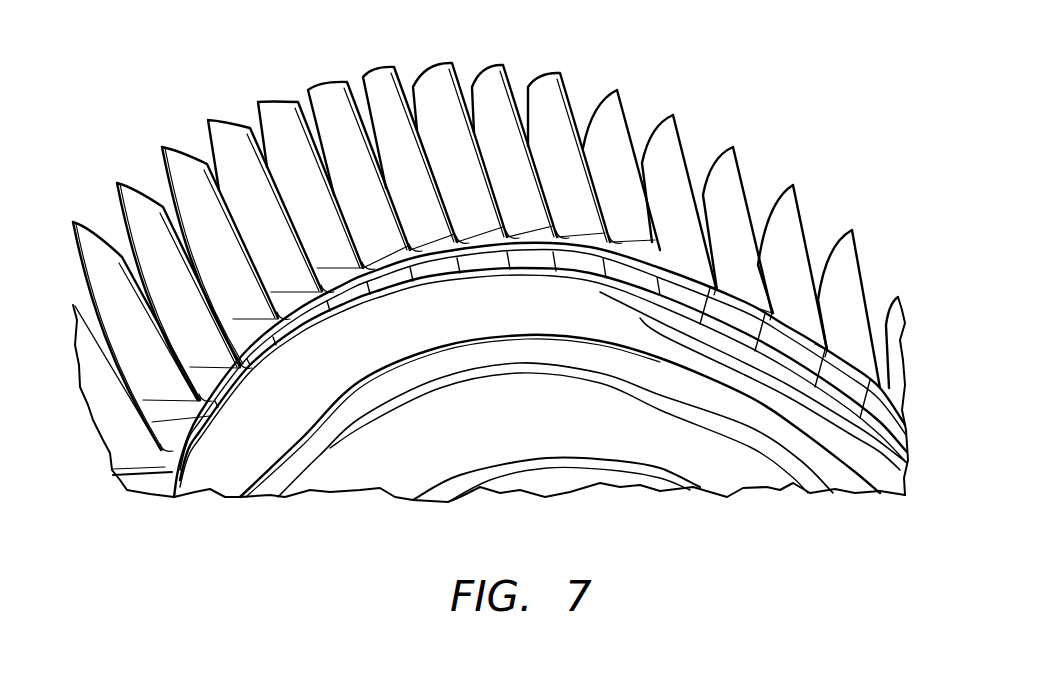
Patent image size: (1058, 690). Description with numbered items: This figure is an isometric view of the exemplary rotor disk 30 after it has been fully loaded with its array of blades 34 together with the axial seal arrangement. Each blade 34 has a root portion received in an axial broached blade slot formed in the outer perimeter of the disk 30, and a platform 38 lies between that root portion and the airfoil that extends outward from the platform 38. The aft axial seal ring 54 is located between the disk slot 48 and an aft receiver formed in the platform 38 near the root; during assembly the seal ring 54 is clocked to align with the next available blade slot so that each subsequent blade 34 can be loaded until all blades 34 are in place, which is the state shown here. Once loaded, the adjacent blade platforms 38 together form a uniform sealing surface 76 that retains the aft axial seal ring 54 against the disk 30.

The rotor disk 30 is at (565, 478).
The blade 34 is at (460, 62).
The platform 38 is at (800, 220).
The disk slot 48 is at (543, 352).
The aft axial seal ring 54 is at (513, 318).
The uniform sealing surface 76 is at (673, 316).